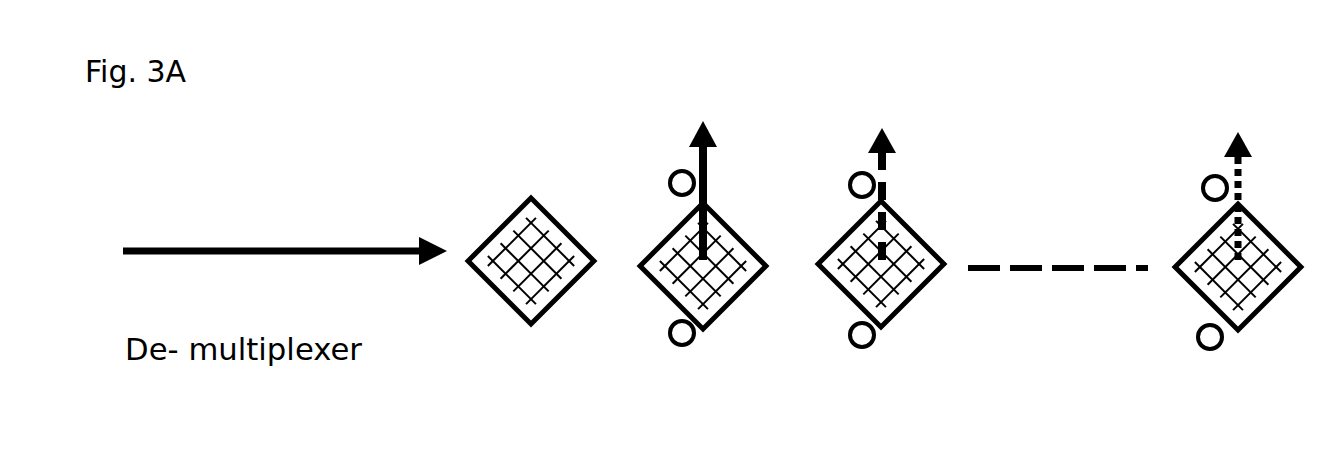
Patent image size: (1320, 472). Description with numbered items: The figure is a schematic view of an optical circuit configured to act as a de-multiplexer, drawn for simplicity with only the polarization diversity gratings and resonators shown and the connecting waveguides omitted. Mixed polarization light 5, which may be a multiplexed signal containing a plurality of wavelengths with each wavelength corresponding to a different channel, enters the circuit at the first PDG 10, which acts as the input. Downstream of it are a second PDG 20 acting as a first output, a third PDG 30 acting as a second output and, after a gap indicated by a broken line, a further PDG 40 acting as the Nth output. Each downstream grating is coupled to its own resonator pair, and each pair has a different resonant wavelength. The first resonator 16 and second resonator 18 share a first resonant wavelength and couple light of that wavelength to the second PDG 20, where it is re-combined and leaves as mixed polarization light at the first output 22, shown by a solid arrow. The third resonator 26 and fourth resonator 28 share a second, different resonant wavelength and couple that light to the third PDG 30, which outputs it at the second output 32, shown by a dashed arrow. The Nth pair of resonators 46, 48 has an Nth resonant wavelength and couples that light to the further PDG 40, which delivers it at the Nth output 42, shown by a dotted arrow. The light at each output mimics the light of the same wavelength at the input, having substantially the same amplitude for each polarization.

The mixed polarization light 5 is at (287, 245).
The first polarization diversity grating 10 is at (488, 230).
The first resonator 16 is at (682, 170).
The second resonator 18 is at (682, 347).
The second polarization diversity grating 20 is at (663, 232).
The first output 22 is at (705, 120).
The third resonator 26 is at (853, 173).
The fourth resonator 28 is at (862, 349).
The third polarization diversity grating 30 is at (845, 227).
The second output 32 is at (887, 130).
The (N+1)th polarization diversity grating 40 is at (1192, 233).
The Nth output 42 is at (1241, 133).
The Nth pair resonator 46 is at (1213, 175).
The Nth pair resonator 48 is at (1210, 351).